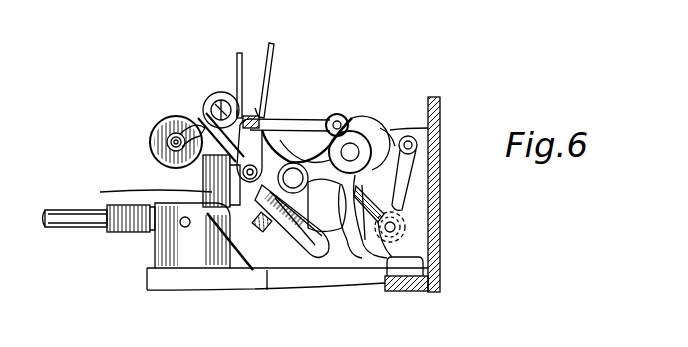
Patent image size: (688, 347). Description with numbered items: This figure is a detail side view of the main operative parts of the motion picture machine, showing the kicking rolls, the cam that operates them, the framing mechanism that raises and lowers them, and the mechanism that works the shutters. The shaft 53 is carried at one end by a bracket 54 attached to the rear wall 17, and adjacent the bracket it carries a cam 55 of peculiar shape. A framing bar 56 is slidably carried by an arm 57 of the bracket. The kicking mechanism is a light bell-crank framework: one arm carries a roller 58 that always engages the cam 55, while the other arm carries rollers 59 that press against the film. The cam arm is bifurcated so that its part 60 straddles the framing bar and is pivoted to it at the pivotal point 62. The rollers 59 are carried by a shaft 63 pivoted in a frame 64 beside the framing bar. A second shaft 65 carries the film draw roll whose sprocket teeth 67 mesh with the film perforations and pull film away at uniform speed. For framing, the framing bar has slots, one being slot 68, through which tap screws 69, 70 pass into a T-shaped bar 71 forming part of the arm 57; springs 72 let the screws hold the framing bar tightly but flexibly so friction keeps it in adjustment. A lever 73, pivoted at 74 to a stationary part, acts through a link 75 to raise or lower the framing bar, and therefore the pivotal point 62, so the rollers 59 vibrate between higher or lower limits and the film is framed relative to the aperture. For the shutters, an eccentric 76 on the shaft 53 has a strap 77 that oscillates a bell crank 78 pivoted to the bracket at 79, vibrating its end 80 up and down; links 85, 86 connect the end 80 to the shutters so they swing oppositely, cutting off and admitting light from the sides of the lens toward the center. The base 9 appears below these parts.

The base 9 is at (380, 292).
The rear wall 17 is at (441, 110).
The shaft 53 is at (380, 122).
The bracket 54 is at (366, 187).
The cam 55 is at (351, 142).
The framing bar 56 is at (270, 127).
The arm 57 is at (362, 192).
The roller 58 is at (337, 113).
The rollers 59 is at (168, 147).
The part of cam arm 60 is at (305, 148).
The pivotal point 62 is at (218, 192).
The shaft 63 is at (152, 124).
The frame 64 is at (195, 116).
The shaft 65 is at (295, 176).
The sprocket teeth 67 is at (327, 205).
The slot 68 is at (208, 116).
The tap screw 69 is at (256, 215).
The tap screw 70 is at (232, 167).
The T-shaped bar 71 is at (262, 118).
The springs 72 is at (284, 250).
The lever 73 is at (147, 232).
The pivot 74 is at (180, 228).
The link 75 is at (129, 188).
The eccentric 76 is at (360, 148).
The strap 77 is at (428, 128).
The bell crank 78 is at (412, 196).
The pivot 79 is at (406, 228).
The end of bell crank 80 is at (240, 270).
The link 85 is at (273, 48).
The link 86 is at (236, 62).